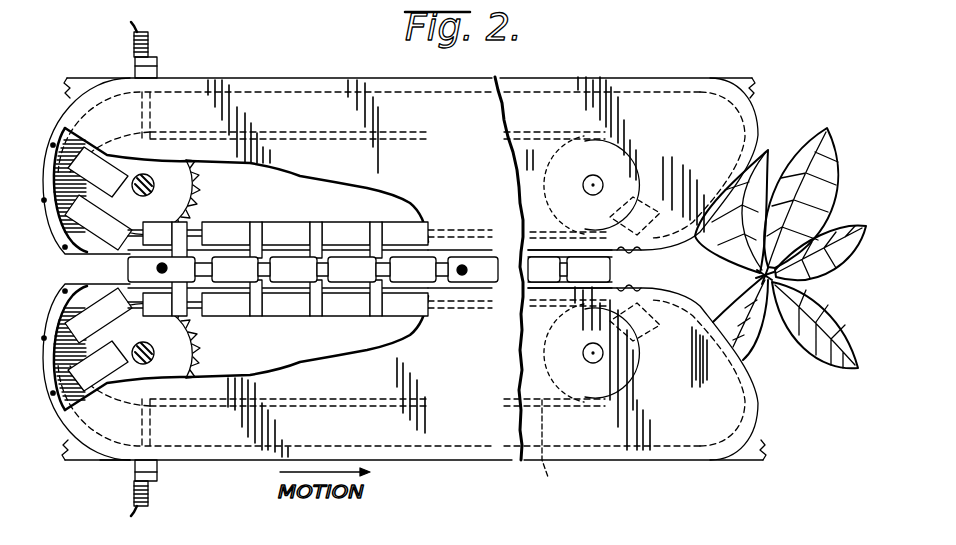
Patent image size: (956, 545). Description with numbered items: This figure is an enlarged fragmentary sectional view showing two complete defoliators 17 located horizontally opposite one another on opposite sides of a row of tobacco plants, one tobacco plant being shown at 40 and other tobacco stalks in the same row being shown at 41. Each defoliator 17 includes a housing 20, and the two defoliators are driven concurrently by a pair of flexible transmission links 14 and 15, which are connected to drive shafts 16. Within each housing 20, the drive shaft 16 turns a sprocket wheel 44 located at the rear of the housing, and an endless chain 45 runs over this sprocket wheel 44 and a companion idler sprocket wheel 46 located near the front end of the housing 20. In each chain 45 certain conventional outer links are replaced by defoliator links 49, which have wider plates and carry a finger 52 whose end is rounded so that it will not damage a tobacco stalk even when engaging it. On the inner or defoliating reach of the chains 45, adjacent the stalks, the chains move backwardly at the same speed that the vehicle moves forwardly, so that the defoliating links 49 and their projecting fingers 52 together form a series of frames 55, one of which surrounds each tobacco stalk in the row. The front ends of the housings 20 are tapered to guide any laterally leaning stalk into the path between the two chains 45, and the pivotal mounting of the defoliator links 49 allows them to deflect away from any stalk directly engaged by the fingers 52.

The flexible transmission link 14 is at (150, 44).
The flexible transmission link 15 is at (152, 498).
The drive shaft 16 is at (113, 470).
The defoliator 17 is at (686, 70).
The housing 20 is at (726, 118).
The tobacco plant 40 is at (855, 268).
The tobacco stalk 41 is at (166, 264).
The sprocket wheel 44 is at (174, 354).
The endless chain 45 is at (323, 405).
The idler sprocket wheel 46 is at (558, 446).
The defoliator link 49 is at (183, 302).
The finger 52 is at (122, 274).
The frame 55 is at (246, 280).